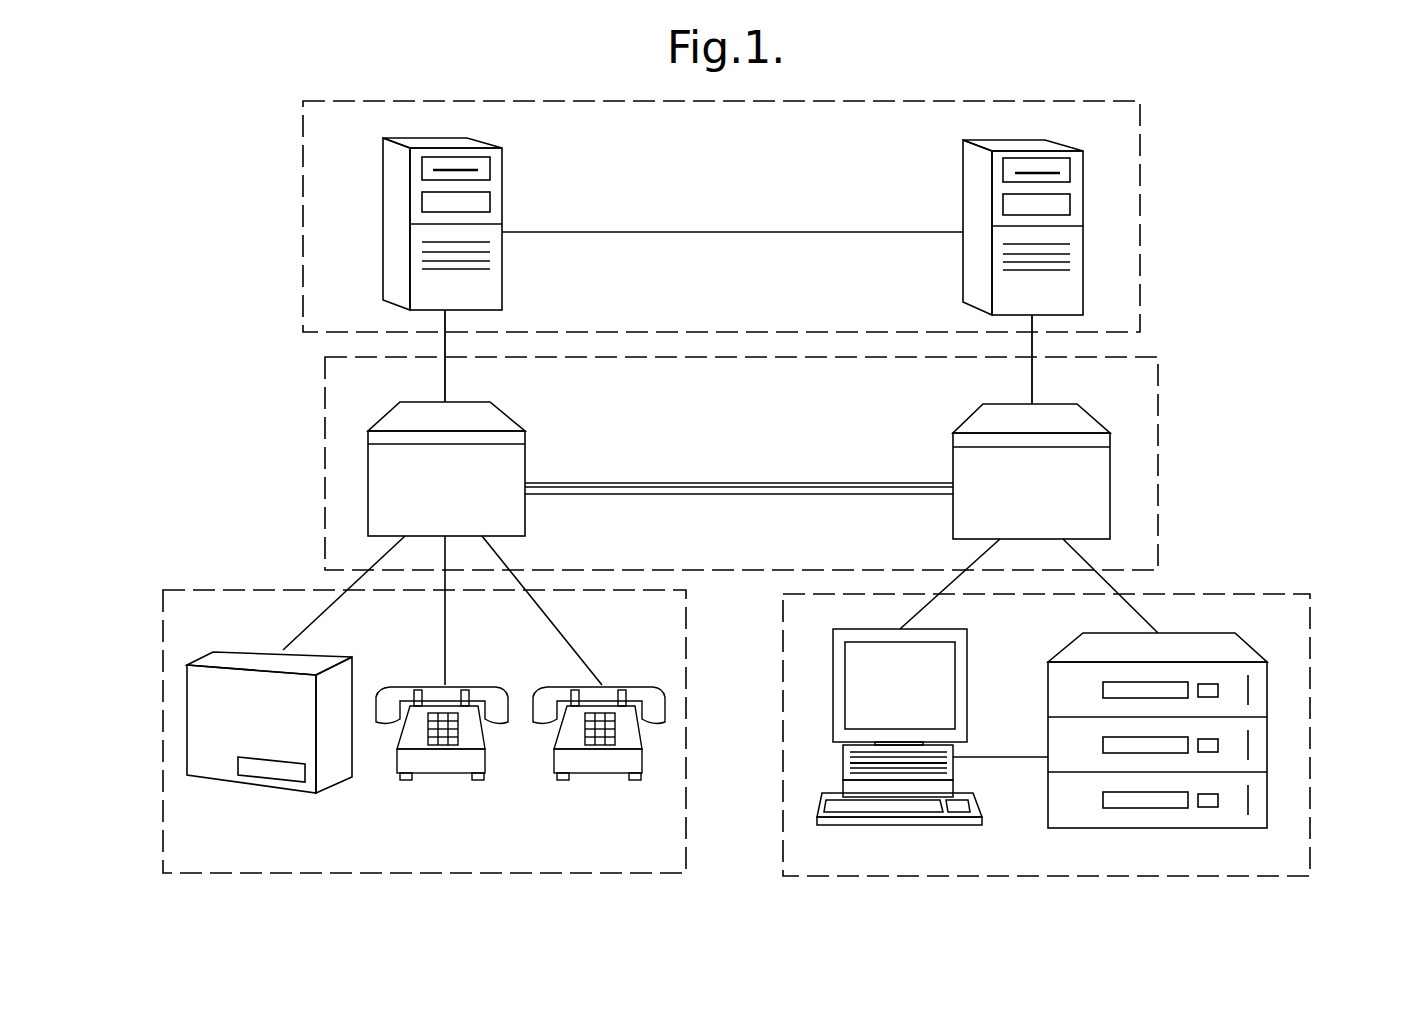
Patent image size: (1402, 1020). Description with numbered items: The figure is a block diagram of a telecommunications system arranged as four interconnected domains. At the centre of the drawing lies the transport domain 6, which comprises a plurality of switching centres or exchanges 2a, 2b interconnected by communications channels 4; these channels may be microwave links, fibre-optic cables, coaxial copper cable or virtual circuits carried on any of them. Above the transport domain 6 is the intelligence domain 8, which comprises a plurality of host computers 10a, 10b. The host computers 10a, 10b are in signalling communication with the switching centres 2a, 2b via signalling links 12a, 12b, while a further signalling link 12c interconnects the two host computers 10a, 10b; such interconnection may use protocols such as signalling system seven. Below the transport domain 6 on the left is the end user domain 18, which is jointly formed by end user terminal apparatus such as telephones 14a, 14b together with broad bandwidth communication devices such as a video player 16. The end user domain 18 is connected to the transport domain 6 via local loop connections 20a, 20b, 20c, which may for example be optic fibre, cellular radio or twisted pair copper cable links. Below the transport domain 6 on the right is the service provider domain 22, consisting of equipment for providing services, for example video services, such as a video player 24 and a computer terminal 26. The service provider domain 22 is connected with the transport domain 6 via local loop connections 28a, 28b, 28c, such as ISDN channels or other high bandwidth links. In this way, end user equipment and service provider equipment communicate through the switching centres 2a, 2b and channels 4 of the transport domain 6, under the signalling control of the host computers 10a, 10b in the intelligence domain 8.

The switching centre 2a is at (368, 475).
The switching centre 2b is at (1110, 490).
The communications channels 4 is at (798, 483).
The transport domain 6 is at (1160, 400).
The intelligence domain 8 is at (1140, 228).
The host computer 10a is at (422, 138).
The host computer 10b is at (1023, 140).
The signalling link 12a is at (447, 325).
The signalling link 12b is at (1027, 325).
The signalling link 12c is at (780, 232).
The telephone 14a is at (440, 775).
The telephone 14b is at (597, 775).
The video player 16 is at (265, 790).
The end user domain 18 is at (163, 645).
The local loop connection 20a is at (327, 613).
The local loop connection 20b is at (445, 610).
The local loop connection 20c is at (552, 620).
The service provider domain 22 is at (1310, 658).
The video player 24 is at (1267, 757).
The computer terminal 26 is at (833, 705).
The local loop connection 28a is at (922, 610).
The local loop connection 28b is at (1150, 620).
The local loop connection 28c is at (1037, 757).